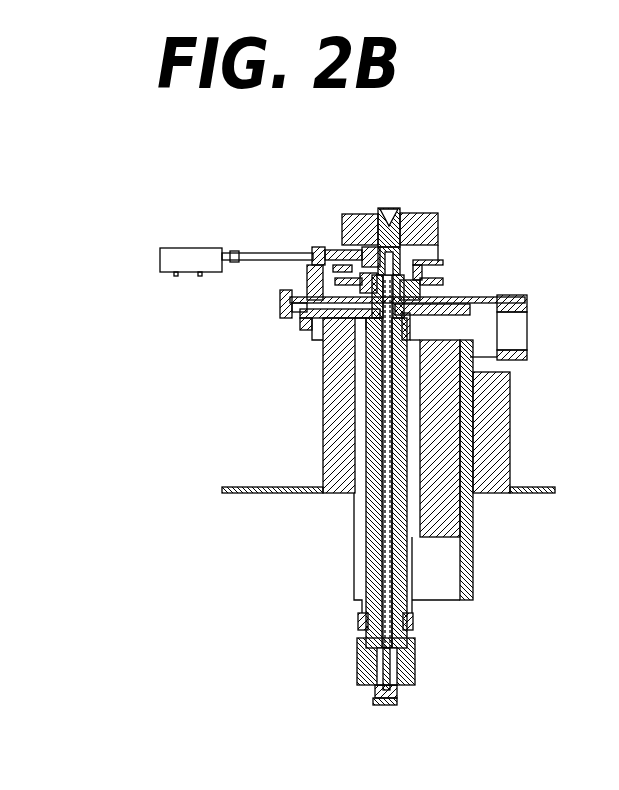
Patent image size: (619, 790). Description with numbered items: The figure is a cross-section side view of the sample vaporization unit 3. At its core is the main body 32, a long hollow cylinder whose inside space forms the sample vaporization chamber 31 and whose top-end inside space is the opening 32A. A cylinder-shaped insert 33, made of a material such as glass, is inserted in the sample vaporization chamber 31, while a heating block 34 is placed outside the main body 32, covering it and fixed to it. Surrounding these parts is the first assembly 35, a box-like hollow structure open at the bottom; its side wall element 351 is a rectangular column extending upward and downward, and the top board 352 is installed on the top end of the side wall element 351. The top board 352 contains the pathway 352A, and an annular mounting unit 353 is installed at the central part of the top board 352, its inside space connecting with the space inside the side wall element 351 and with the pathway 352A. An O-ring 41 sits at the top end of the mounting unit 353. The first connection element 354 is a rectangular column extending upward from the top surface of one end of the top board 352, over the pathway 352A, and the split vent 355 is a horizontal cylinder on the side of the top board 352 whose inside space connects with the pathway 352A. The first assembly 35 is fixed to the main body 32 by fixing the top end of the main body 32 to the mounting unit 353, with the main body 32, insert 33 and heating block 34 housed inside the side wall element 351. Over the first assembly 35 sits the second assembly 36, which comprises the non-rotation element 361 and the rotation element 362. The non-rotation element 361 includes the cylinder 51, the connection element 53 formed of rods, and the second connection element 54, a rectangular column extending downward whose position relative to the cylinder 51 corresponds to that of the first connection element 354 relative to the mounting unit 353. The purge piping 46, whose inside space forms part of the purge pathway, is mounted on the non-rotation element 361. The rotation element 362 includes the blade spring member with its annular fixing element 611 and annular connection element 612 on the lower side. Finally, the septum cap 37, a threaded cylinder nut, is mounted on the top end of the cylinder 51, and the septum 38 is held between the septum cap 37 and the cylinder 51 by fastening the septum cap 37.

The sample vaporization unit 3 is at (534, 210).
The sample vaporization chamber 31 is at (370, 535).
The main body 32 is at (407, 582).
The opening 32A is at (422, 305).
The insert 33 is at (355, 613).
The heating block 34 is at (358, 612).
The first assembly 35 is at (321, 408).
The side wall element 351 is at (323, 449).
The top board 352 is at (473, 300).
The pathway 352A is at (320, 324).
The mounting unit 353 is at (362, 217).
The first connection element 354 is at (305, 277).
The split vent 355 is at (297, 310).
The second assembly 36 is at (300, 243).
The non-rotation element 361 is at (308, 246).
The rotation element 362 is at (422, 290).
The septum cap 37 is at (427, 212).
The septum 38 is at (389, 207).
The O-ring 41 is at (350, 257).
The purge piping 46 is at (263, 260).
The cylinder 51 is at (441, 260).
The connection element 53 is at (330, 247).
The second connection element 54 is at (310, 246).
The fixing element 611 is at (444, 265).
The connection element 612 is at (422, 297).